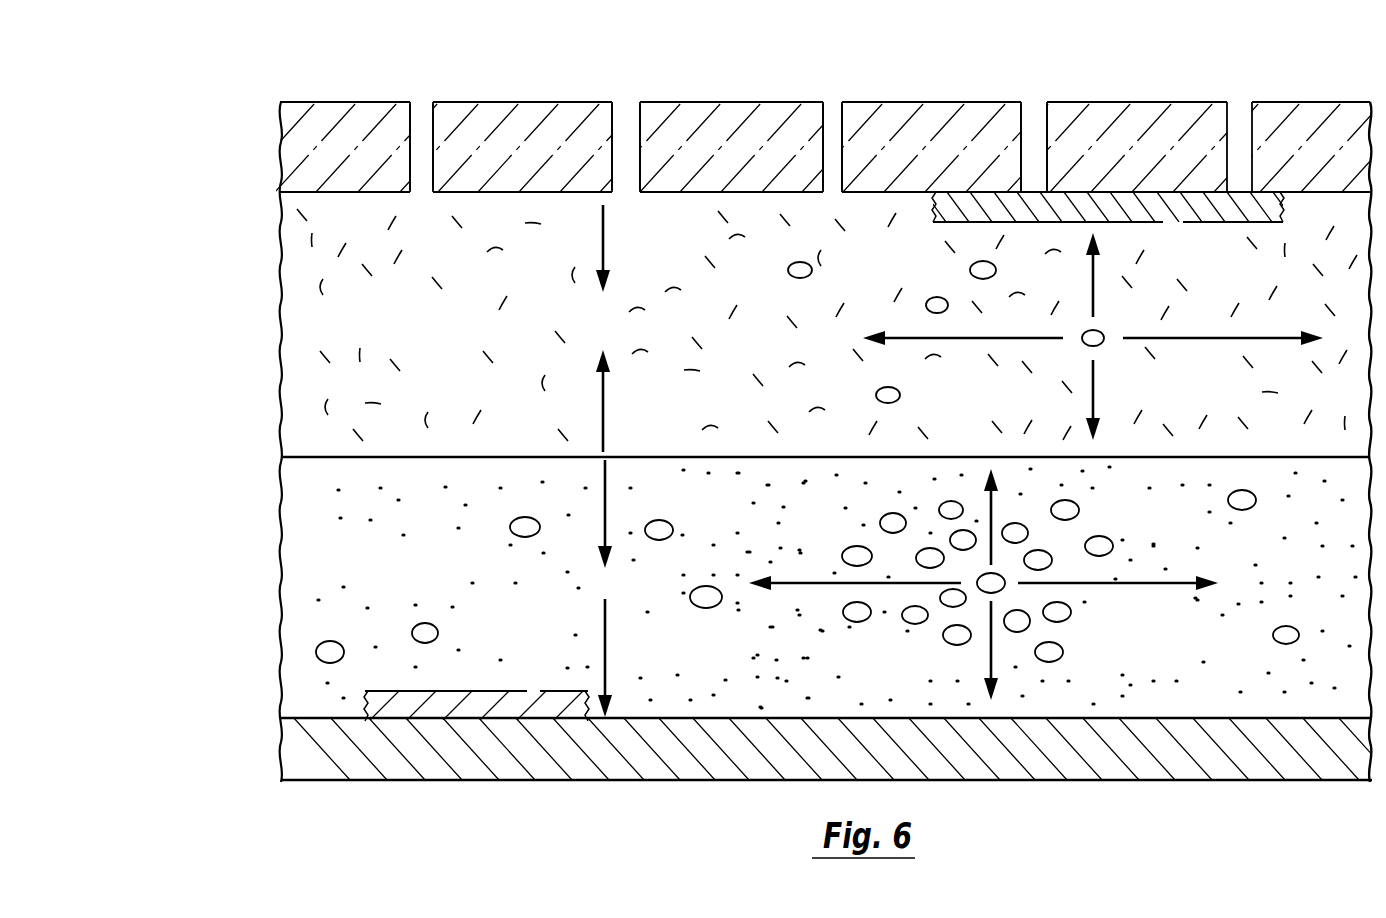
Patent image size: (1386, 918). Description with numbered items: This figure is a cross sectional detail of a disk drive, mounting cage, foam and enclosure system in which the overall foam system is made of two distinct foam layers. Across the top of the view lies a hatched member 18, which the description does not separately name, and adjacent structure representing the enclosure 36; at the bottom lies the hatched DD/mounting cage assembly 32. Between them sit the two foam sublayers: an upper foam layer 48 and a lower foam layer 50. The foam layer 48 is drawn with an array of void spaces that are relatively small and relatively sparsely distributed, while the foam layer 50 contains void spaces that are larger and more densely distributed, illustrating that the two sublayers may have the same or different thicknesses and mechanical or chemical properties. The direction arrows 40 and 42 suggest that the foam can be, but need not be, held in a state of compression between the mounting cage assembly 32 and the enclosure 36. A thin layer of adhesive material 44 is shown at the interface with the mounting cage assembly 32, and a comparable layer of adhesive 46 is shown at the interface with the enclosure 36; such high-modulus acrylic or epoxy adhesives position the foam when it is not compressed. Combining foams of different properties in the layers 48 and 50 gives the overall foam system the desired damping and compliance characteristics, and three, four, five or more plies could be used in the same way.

The upper perforated plate 18 is at (1180, 100).
The DD/mounting cage assembly 32 is at (1082, 765).
The enclosure 36 is at (942, 100).
The direction arrow 40 is at (603, 419).
The direction arrow 42 is at (603, 229).
The layer of adhesive material 44 is at (535, 700).
The layer of adhesive 46 is at (1173, 214).
The foam layer 48 is at (440, 330).
The foam layer 50 is at (430, 566).